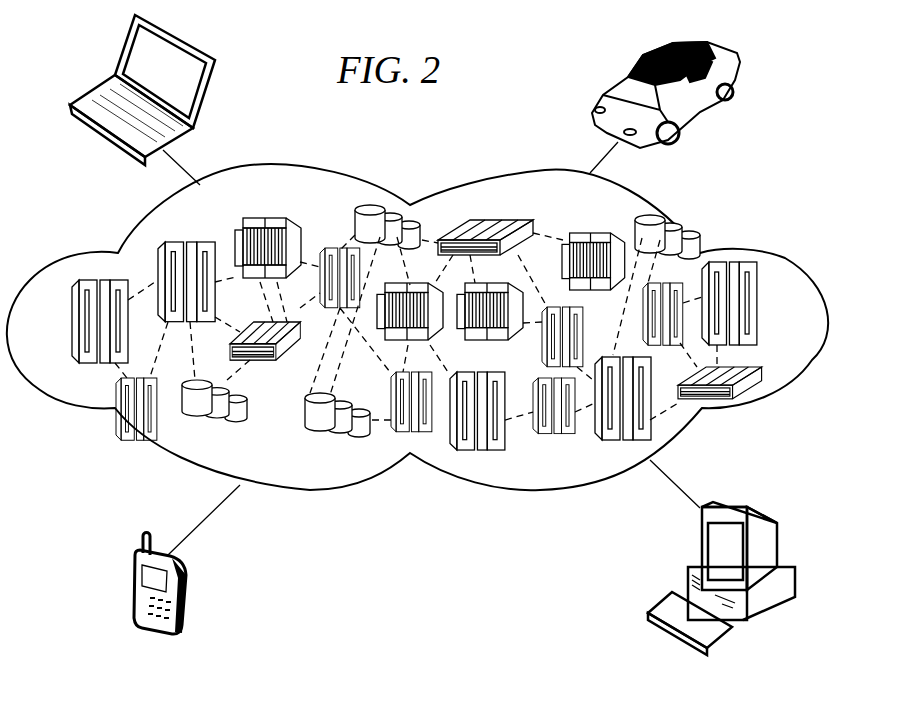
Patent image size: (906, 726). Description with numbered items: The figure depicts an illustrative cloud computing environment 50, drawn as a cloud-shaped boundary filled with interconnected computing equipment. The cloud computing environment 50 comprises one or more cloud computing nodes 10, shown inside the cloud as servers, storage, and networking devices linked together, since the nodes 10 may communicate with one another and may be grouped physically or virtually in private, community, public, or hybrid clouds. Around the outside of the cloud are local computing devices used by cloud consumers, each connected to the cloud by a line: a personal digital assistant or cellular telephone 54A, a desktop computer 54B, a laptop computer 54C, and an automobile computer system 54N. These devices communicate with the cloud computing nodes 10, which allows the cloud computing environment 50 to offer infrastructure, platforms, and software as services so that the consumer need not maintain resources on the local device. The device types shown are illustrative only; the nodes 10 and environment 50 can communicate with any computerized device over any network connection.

The cloud computing environment 50 is at (785, 260).
The cloud computing node 10 is at (742, 398).
The personal digital assistant or cellular telephone 54A is at (186, 560).
The desktop computer 54B is at (700, 560).
The laptop computer 54C is at (100, 78).
The automobile computer system 54N is at (606, 82).